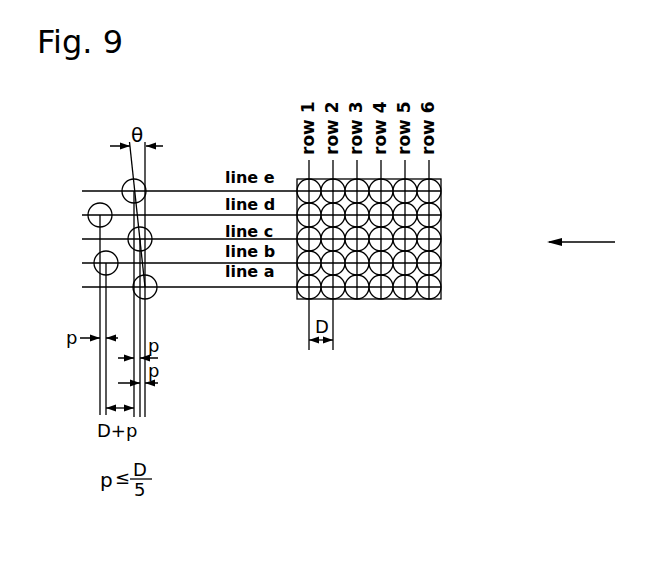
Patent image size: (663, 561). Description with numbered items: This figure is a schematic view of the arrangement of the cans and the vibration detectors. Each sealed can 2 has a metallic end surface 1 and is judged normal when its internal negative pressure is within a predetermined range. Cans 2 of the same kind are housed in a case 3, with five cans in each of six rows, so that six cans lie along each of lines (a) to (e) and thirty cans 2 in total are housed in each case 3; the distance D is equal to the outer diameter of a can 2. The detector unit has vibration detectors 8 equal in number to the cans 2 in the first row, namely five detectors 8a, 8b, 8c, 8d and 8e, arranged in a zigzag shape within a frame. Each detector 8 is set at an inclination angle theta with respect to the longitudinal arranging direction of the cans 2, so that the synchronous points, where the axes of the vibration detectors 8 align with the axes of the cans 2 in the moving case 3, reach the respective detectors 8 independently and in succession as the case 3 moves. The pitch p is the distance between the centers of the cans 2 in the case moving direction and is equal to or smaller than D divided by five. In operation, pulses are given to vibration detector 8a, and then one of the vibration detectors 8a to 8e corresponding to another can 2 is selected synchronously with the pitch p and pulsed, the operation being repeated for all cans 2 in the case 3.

The metallic end surface 1 is at (432, 190).
The can 2 is at (435, 254).
The case 3 is at (441, 274).
The vibration detector 8 is at (147, 183).
The vibration detector 8a is at (153, 293).
The vibration detector 8b is at (94, 261).
The vibration detector 8c is at (152, 237).
The vibration detector 8d is at (88, 213).
The vibration detector 8e is at (125, 184).